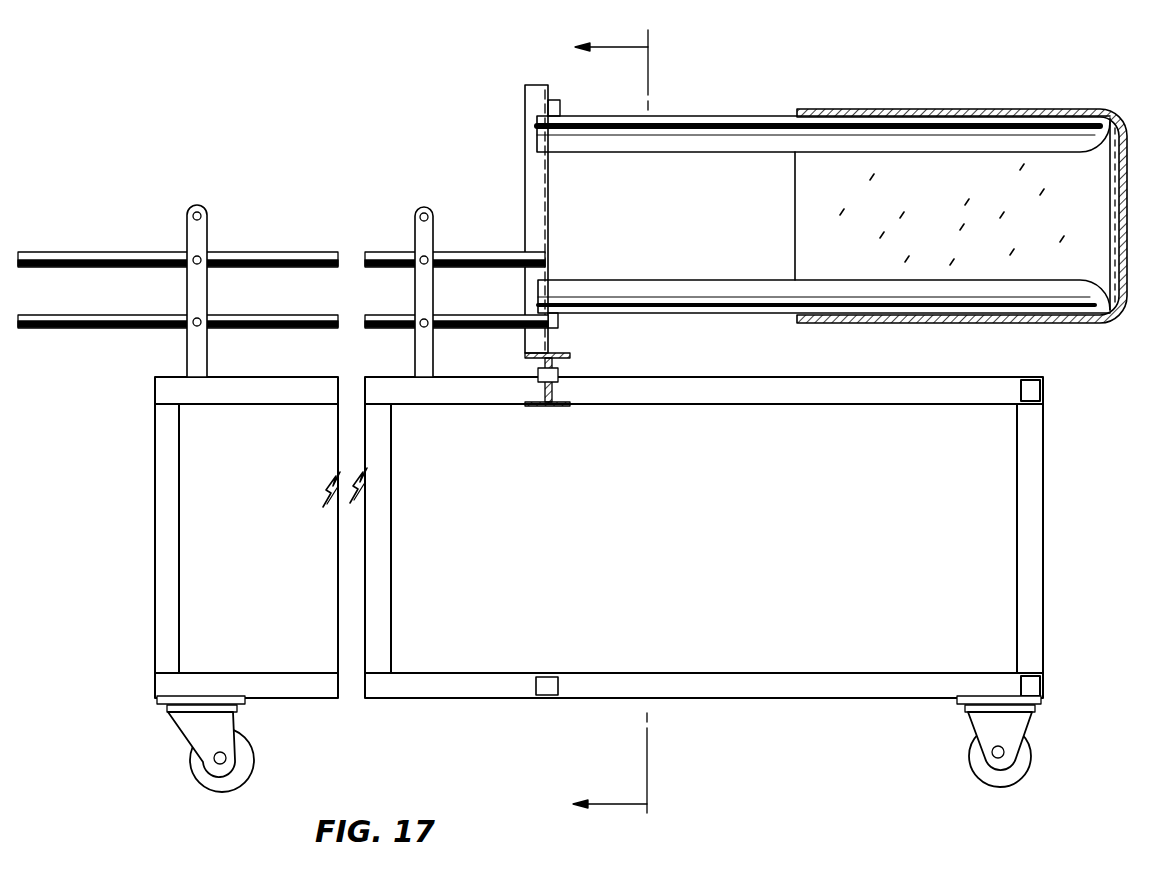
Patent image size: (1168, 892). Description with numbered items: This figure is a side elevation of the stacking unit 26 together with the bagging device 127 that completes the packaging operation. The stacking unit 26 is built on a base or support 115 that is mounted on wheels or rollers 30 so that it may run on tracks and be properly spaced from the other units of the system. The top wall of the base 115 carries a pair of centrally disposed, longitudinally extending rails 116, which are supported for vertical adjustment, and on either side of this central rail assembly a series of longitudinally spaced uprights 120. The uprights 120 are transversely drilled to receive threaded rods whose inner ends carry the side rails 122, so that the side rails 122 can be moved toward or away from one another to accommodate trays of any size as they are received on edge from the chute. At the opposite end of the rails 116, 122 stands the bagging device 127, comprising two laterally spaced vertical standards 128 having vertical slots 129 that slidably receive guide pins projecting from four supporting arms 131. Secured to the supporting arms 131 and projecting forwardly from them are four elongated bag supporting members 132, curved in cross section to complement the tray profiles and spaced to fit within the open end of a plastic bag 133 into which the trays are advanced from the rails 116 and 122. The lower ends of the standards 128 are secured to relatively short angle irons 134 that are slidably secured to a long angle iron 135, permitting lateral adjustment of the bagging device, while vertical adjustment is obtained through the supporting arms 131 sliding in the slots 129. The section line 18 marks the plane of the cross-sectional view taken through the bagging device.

The section line 18- 18 is at (627, 422).
The stacking unit 26 is at (283, 255).
The wheels or rollers 30 is at (251, 757).
The base or support 115 is at (280, 515).
The rails 116 is at (272, 328).
The uprights 120 is at (205, 300).
The side rails 122 is at (302, 252).
The bagging device 127 is at (708, 104).
The vertical standards 128 is at (533, 85).
The vertical slots 129 is at (551, 221).
The supporting arms 131 is at (560, 108).
The bag supporting members 132 is at (752, 152).
The plastic bag 133 is at (973, 110).
The short angle irons 134 is at (535, 406).
The long angle iron 135 is at (565, 406).